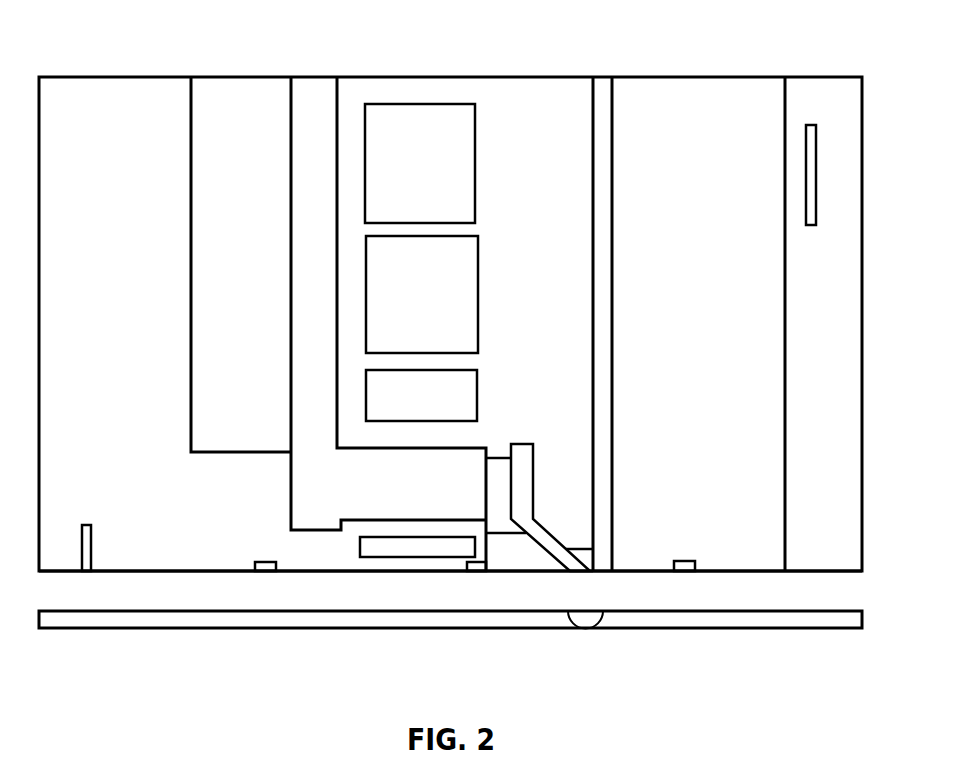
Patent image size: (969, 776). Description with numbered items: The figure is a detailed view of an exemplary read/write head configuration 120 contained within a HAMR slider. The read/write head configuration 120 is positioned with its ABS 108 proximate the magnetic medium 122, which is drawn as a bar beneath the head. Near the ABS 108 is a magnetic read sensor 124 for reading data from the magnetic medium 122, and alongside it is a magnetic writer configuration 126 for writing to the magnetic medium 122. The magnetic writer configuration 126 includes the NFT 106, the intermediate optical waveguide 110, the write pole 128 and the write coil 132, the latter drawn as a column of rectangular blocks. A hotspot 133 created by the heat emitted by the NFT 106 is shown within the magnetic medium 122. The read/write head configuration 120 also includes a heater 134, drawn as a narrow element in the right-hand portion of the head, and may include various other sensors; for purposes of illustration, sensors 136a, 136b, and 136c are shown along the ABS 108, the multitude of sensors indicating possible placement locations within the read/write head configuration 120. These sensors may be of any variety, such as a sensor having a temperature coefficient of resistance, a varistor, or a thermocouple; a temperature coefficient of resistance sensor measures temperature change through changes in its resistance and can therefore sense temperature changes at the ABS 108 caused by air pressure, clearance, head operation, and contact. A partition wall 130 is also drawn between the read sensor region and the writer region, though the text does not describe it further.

The NFT 106 is at (587, 549).
The ABS 108 is at (768, 573).
The intermediate optical waveguide 110 is at (612, 453).
The read/write head configuration 120 is at (640, 56).
The magnetic medium 122 is at (157, 633).
The magnetic read sensor 124 is at (91, 535).
The magnetic writer configuration 126 is at (160, 196).
The write pole 128 is at (522, 455).
The partition wall 130 is at (299, 454).
The write coil 132 is at (470, 290).
The hotspot 133 is at (590, 623).
The heater 134 is at (811, 225).
The sensor 136a is at (265, 562).
The sensor 136b is at (477, 562).
The sensor 136c is at (685, 561).